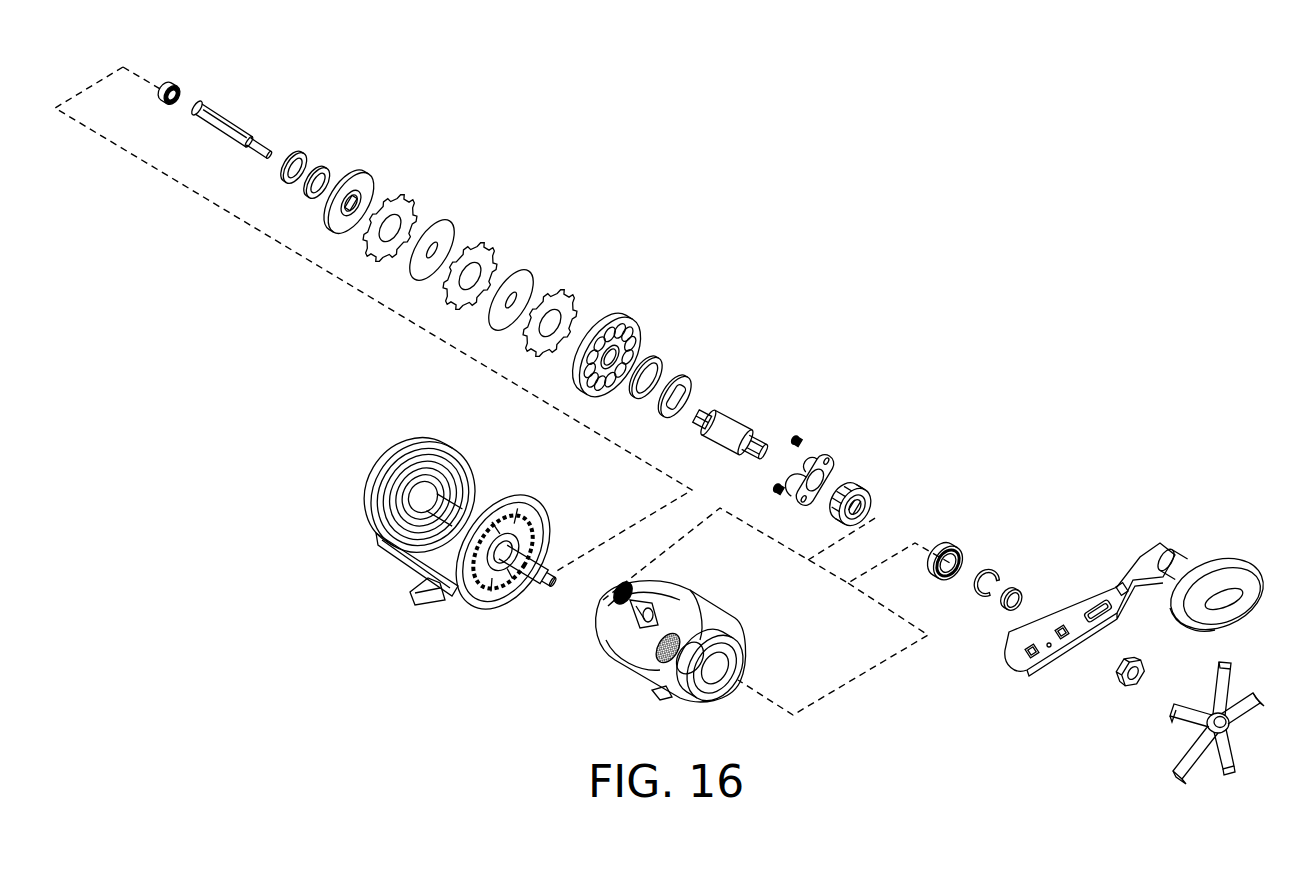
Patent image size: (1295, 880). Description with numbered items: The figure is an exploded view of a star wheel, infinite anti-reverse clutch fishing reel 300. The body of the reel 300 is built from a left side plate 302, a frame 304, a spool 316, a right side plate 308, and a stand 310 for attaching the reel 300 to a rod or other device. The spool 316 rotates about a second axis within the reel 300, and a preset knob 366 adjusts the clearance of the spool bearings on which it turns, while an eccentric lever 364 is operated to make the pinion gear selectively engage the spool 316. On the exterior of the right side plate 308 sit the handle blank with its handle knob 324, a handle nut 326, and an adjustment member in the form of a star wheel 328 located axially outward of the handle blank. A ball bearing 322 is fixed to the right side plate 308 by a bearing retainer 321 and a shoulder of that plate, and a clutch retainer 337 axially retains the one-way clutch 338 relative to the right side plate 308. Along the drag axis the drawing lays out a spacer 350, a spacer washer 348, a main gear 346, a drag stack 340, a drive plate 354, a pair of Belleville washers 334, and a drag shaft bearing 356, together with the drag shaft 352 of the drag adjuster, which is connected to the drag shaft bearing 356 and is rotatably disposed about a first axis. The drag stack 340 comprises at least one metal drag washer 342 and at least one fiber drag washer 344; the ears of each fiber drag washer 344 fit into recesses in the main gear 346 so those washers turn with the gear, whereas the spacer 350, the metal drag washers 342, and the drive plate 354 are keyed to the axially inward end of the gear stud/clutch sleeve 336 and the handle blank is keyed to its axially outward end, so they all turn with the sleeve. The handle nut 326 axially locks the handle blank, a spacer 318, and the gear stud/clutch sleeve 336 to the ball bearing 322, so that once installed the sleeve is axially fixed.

The fishing reel 300 is at (772, 259).
The left side plate 302 is at (390, 472).
The frame 304 is at (400, 562).
The right side plate 308 is at (615, 690).
The stand 310 is at (413, 607).
The spool 316 is at (467, 490).
The spacer 318 is at (1024, 592).
The bearing retainer 321 is at (1000, 568).
The ball bearing 322 is at (956, 540).
The handle knob 324 is at (1190, 557).
The handle nut 326 is at (1120, 680).
The star wheel 328 is at (1173, 765).
The Belleville washers 334 is at (303, 153).
The gear stud/clutch sleeve 336 is at (733, 418).
The clutch retainer 337 is at (830, 458).
The one-way clutch 338 is at (863, 488).
The drag stack 340 is at (625, 228).
The metal drag washer 342 is at (440, 232).
The fiber drag washer 344 is at (400, 214).
The main gear 346 is at (613, 316).
The spacer washer 348 is at (652, 362).
The spacer 350 is at (686, 380).
The drag shaft 352 is at (265, 140).
The drive plate 354 is at (356, 185).
The drag shaft bearing 356 is at (172, 85).
The eccentric lever 364 is at (608, 602).
The preset knob 366 is at (663, 698).